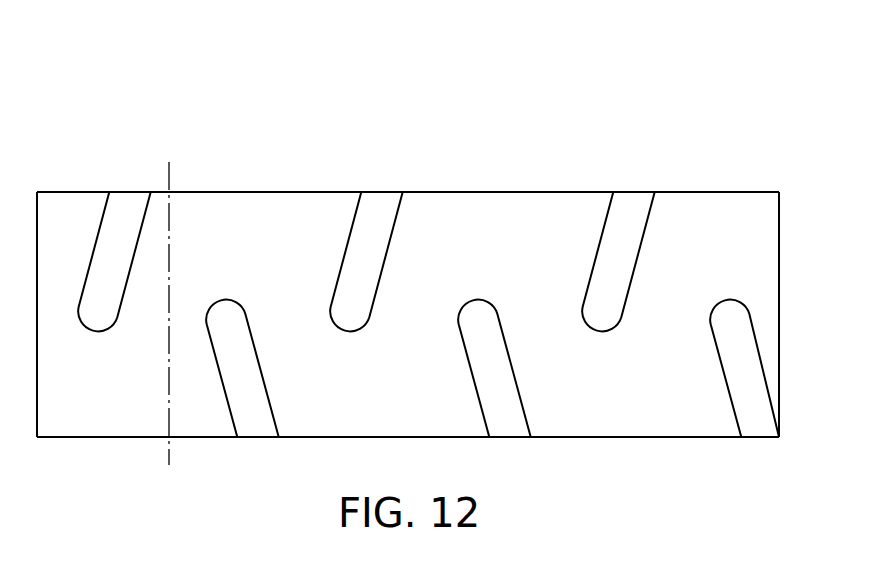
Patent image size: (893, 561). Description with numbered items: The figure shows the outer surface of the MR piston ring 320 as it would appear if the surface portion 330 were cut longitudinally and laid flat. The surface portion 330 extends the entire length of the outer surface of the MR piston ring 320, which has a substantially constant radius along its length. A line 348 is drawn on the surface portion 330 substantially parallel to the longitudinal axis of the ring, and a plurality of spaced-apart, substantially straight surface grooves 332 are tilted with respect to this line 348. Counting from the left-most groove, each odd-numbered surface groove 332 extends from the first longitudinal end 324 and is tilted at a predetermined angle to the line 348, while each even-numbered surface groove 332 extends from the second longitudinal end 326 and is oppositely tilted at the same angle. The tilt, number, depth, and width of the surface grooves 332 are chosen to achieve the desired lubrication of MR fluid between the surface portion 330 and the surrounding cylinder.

The MR piston ring 320 is at (463, 140).
The first longitudinal end 324 is at (256, 192).
The second longitudinal end 326 is at (632, 437).
The surface portion 330 is at (722, 209).
The surface groove 332 is at (598, 260).
The line 348 is at (169, 172).